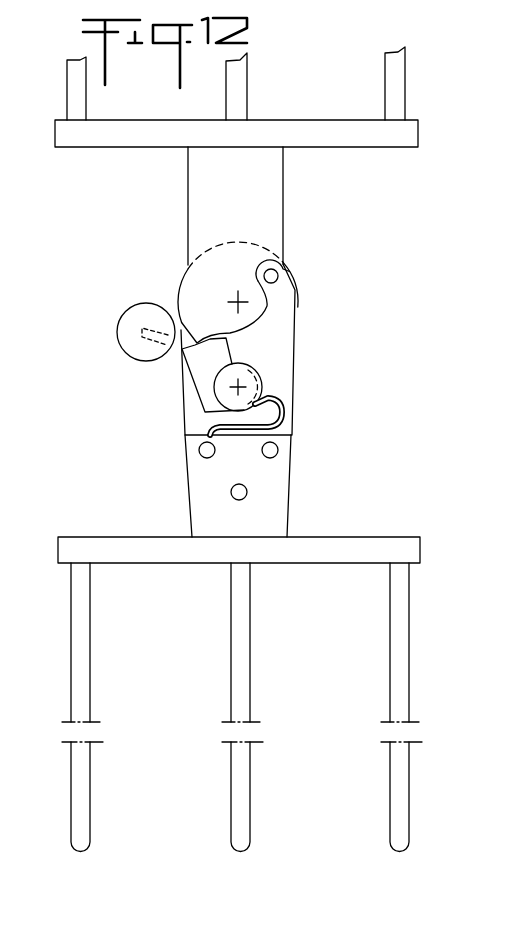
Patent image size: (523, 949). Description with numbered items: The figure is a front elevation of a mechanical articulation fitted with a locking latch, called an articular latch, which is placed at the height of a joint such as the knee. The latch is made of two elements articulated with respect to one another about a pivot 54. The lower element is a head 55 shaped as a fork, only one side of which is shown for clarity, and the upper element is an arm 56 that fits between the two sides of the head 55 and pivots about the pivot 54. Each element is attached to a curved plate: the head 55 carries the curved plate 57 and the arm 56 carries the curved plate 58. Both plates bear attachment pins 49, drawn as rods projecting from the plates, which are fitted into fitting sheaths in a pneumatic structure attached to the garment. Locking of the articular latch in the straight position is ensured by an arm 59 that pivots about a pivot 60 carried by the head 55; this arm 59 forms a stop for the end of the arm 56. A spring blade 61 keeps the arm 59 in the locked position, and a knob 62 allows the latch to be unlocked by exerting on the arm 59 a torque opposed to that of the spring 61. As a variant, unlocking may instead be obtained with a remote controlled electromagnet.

The attachment pins 49 is at (234, 98).
The pivot 54 is at (243, 311).
The head 55 is at (293, 343).
The arm 56 is at (268, 180).
The curved plate 57 is at (97, 547).
The curved plate 58 is at (95, 138).
The arm 59 is at (202, 370).
The pivot 60 is at (241, 385).
The spring blade 61 is at (285, 415).
The knob 62 is at (146, 312).